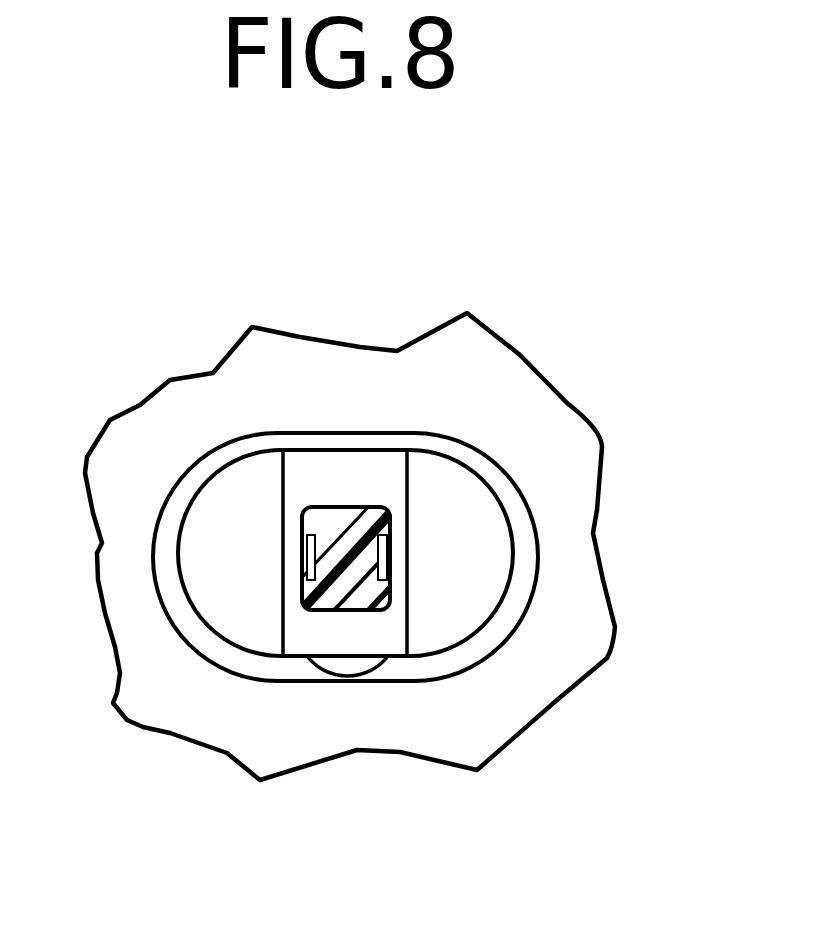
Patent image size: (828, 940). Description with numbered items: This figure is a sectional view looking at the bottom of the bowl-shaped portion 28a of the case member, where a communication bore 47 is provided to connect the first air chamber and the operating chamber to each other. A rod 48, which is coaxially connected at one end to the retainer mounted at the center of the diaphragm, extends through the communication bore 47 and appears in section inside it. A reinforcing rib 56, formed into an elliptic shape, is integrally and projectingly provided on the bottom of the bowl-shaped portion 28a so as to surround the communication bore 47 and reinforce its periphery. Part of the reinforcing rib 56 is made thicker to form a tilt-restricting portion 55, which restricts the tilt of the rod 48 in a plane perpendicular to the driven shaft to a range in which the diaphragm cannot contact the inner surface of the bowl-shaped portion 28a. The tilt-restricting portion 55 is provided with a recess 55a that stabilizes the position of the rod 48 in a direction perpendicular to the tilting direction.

The bowl-shaped portion 28a is at (353, 377).
The reinforcing rib 56 is at (382, 440).
The communication bore 47 is at (283, 498).
The rod 48 is at (388, 524).
The tilt-restricting portion 55 is at (405, 670).
The recess 55a is at (345, 667).